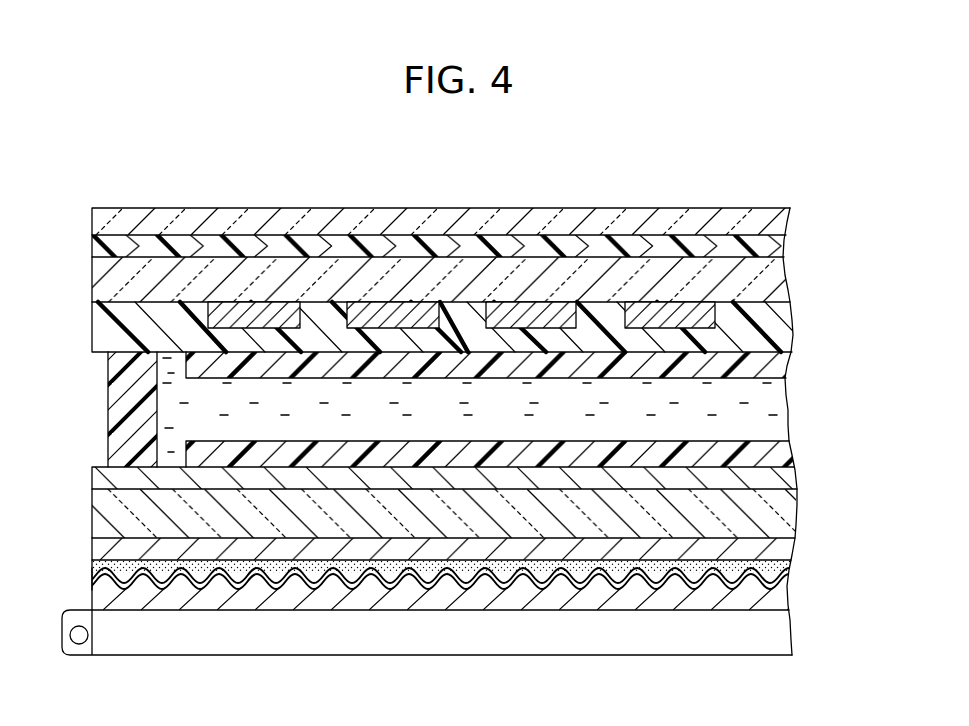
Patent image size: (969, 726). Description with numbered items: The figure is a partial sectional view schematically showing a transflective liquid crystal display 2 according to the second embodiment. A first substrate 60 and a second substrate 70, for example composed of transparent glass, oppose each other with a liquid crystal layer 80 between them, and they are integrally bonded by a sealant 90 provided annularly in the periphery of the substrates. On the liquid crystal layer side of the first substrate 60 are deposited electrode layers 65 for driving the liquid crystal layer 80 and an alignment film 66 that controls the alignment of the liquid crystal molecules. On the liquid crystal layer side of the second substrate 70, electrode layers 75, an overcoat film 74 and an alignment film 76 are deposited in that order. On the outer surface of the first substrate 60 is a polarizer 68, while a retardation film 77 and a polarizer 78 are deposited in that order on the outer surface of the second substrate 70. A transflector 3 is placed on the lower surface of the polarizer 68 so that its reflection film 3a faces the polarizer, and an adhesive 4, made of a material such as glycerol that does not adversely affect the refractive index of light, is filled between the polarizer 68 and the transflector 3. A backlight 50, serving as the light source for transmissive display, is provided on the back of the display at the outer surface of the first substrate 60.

The liquid crystal display 2 is at (762, 165).
The transflector 3 is at (773, 598).
The reflection film 3a is at (97, 574).
The adhesive 4 is at (770, 560).
The backlight 50 is at (777, 632).
The first substrate 60 is at (783, 503).
The electrode layers 65 is at (773, 477).
The alignment film 66 is at (782, 453).
The polarizer 68 is at (767, 545).
The second substrate 70 is at (770, 280).
The overcoat film 74 is at (780, 325).
The electrode layers 75 is at (263, 313).
The alignment film 76 is at (773, 367).
The retardation film 77 is at (772, 240).
The polarizer 78 is at (773, 220).
The liquid crystal layer 80 is at (773, 403).
The sealant 90 is at (132, 407).